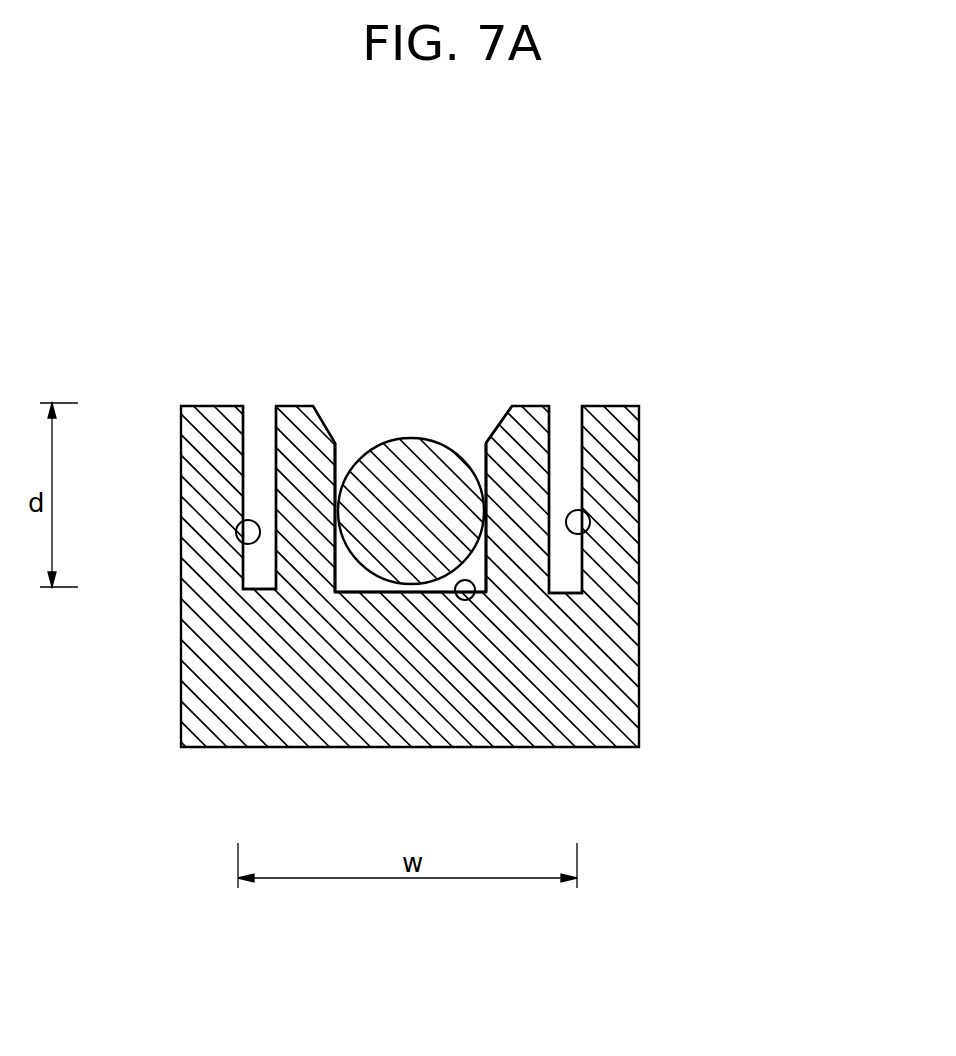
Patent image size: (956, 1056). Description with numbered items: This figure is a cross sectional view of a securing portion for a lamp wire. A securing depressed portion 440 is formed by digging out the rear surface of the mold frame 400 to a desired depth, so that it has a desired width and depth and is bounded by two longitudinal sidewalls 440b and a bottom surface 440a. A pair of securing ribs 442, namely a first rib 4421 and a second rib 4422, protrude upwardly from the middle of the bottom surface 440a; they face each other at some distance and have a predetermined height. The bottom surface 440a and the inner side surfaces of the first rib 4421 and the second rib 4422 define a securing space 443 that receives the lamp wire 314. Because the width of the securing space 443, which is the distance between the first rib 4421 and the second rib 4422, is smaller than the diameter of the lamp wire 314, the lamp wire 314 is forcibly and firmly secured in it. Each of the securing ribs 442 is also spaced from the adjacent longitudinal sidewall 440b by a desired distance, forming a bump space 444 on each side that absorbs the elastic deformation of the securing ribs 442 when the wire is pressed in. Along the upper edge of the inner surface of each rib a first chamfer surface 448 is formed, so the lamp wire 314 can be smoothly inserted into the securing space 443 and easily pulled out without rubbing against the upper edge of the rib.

The lamp wire 314 is at (412, 438).
The mold frame 400 is at (640, 668).
The securing depressed portion 440 is at (350, 420).
The bottom surface 440a is at (472, 598).
The longitudinal sidewall 440b is at (237, 523).
The securing ribs 442 is at (772, 428).
The first rib 4421 is at (317, 465).
The second rib 4422 is at (537, 468).
The securing space 443 is at (343, 582).
The bump space 444 is at (258, 413).
The first chamfer surface 448 is at (323, 420).